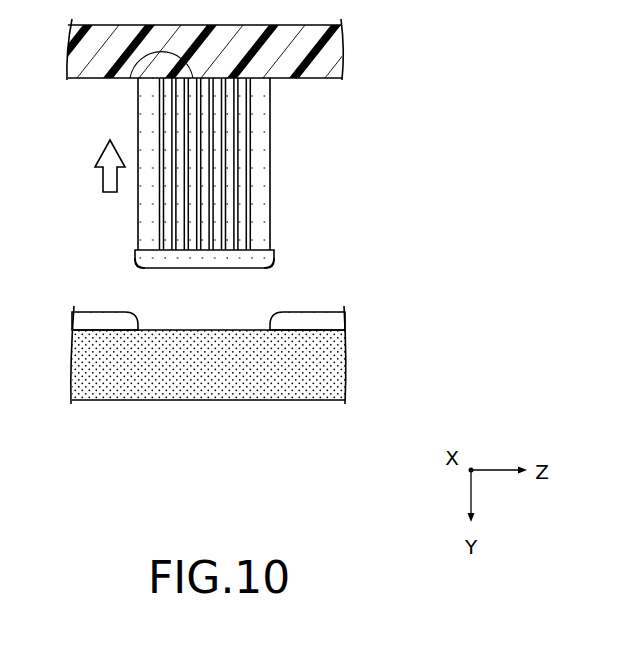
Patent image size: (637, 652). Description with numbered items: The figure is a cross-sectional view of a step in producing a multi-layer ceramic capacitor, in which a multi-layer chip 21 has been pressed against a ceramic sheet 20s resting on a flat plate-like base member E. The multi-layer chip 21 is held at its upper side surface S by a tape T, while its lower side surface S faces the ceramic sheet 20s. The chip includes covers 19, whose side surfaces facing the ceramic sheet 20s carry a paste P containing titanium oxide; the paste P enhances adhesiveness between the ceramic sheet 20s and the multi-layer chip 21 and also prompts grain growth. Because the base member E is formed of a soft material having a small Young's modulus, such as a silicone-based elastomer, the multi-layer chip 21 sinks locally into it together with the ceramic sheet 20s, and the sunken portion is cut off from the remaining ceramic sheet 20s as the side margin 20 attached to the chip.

The tape T is at (323, 60).
The side surface S is at (130, 78).
The multi-layer chip 21 is at (318, 137).
The covers 19 is at (138, 219).
The side margin 20 is at (210, 268).
The paste P is at (136, 264).
The ceramic sheet 20s is at (325, 322).
The base member E is at (322, 370).